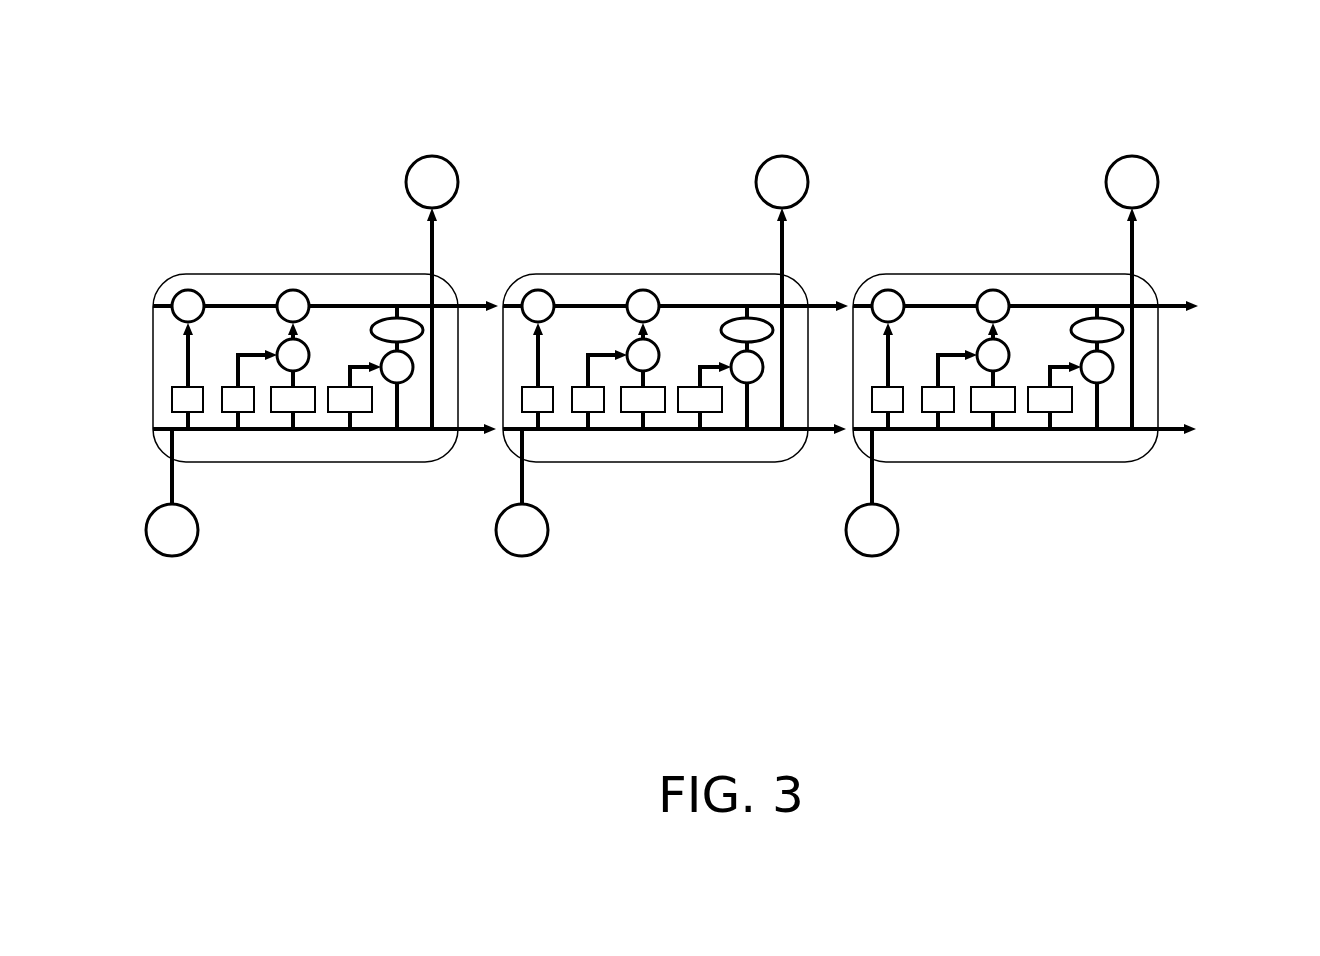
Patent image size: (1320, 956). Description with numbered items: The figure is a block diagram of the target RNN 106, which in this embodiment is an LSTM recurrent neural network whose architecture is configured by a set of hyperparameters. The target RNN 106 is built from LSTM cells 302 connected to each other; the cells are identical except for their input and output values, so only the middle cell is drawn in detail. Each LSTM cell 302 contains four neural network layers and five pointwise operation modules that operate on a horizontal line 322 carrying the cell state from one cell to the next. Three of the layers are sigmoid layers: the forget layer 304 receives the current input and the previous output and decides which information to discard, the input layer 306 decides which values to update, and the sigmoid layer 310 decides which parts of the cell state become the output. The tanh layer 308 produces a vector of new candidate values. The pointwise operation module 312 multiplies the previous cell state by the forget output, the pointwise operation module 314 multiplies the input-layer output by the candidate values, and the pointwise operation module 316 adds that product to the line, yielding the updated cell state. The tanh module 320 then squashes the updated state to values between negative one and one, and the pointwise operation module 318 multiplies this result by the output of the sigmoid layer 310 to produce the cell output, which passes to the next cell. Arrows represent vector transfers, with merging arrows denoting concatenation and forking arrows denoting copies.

The target RNN 106 is at (1216, 118).
The LSTM cell 302 is at (228, 273).
The sigmoid layer 304 is at (547, 412).
The sigmoid layer 306 is at (598, 412).
The tanh layer 308 is at (653, 412).
The sigmoid layer 310 is at (713, 412).
The pointwise operation module 312 is at (555, 298).
The pointwise operation module 314 is at (657, 345).
The pointwise operation module 316 is at (660, 298).
The pointwise operation module 318 is at (763, 365).
The tanh module 320 is at (733, 308).
The horizontal line 322 is at (800, 290).